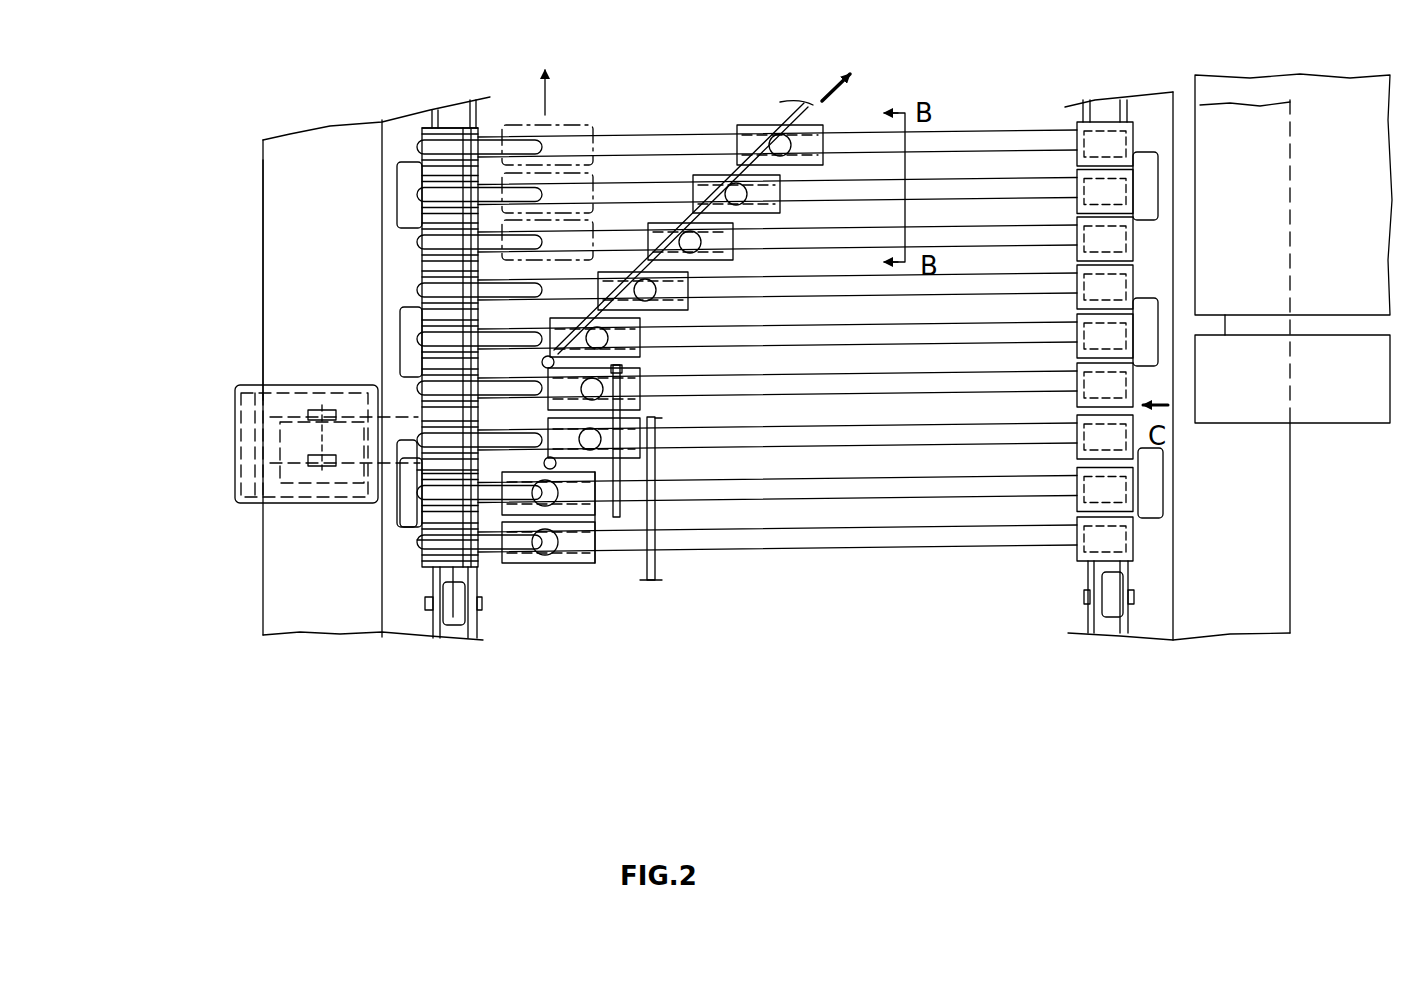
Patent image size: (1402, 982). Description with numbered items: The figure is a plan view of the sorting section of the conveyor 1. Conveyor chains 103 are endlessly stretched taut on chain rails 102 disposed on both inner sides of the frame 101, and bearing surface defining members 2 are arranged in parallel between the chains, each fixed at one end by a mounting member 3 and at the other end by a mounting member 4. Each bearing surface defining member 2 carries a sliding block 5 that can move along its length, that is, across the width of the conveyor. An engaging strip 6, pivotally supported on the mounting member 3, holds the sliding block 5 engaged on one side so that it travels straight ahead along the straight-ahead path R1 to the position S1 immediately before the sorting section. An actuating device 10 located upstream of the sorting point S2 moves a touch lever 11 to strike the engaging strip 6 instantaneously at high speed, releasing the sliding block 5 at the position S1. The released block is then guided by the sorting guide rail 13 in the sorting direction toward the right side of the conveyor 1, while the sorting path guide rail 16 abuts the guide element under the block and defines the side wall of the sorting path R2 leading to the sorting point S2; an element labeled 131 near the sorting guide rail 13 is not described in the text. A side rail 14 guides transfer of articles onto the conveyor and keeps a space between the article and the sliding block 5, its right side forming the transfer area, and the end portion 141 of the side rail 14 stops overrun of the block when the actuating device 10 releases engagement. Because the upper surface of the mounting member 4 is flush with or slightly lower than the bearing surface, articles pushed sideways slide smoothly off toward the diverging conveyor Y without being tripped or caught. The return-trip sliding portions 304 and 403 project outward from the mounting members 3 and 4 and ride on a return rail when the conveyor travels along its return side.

The conveyor 1 is at (358, 112).
The frame 101 is at (272, 190).
The bearing surface defining member 2 is at (968, 137).
The mounting member 3 is at (413, 560).
The mounting member 4 is at (1080, 510).
The return-trip sliding portion 403 is at (1150, 500).
The sliding block 5 is at (597, 563).
The engaging strip 6 is at (420, 482).
The actuating device 10 is at (237, 445).
The touch lever 11 is at (395, 443).
The sorting guide rail 13 is at (670, 207).
The slider guide holders 131 is at (553, 343).
The side rail 14 is at (657, 520).
The end portion 141 is at (657, 418).
The sorting path guide rail 16 is at (637, 522).
The chain rails 102 is at (412, 617).
The conveyor chains 103 is at (453, 615).
The return-trip sliding portion 304 is at (393, 540).
The straight-ahead path R1 is at (548, 567).
The sorting path R2 is at (615, 520).
The position immediately before the sorting section S1 is at (465, 467).
The sorting point S2 is at (542, 365).
The diverging conveyor Y is at (1328, 395).